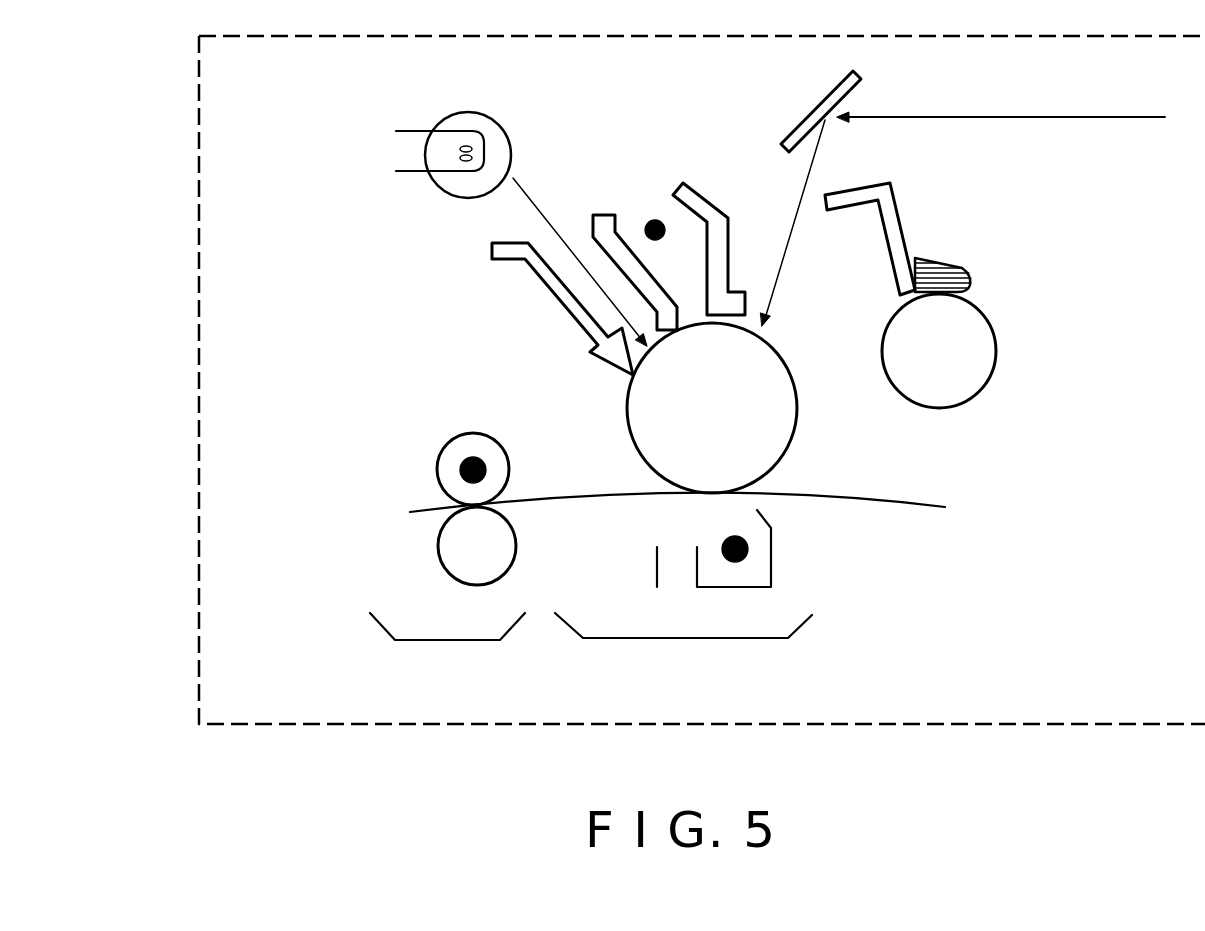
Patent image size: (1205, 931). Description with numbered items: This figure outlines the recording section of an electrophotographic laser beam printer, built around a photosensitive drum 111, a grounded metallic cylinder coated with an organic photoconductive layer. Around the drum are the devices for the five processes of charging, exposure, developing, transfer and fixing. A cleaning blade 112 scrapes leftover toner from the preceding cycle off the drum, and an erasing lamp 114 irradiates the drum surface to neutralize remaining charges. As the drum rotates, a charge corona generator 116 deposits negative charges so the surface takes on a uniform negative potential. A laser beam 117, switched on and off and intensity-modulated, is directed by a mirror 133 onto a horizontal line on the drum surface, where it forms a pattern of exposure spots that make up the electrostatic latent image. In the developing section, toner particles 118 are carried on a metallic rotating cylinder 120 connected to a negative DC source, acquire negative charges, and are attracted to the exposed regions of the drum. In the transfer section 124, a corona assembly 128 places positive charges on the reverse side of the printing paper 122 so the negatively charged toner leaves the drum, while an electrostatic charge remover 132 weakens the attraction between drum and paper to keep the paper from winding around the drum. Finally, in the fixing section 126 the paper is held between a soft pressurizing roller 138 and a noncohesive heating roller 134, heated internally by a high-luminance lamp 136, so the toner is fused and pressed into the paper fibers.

The photosensitive drum 111 is at (778, 353).
The cleaning blade 112 is at (590, 350).
The erasing lamp 114 is at (403, 131).
The charge corona generator 116 is at (648, 222).
The laser beam 117 is at (937, 116).
The toner particles 118 is at (940, 262).
The metallic rotating cylinder 120 is at (997, 352).
The printing paper 122 is at (880, 500).
The transfer section 124 is at (683, 644).
The fixing section 126 is at (447, 645).
The corona assembly 128 is at (748, 549).
The electrostatic charge remover 132 is at (655, 562).
The heating roller 134 is at (437, 469).
The high-luminance lamp 136 is at (437, 452).
The pressurizing roller 138 is at (438, 546).
The mirror 133 is at (815, 105).